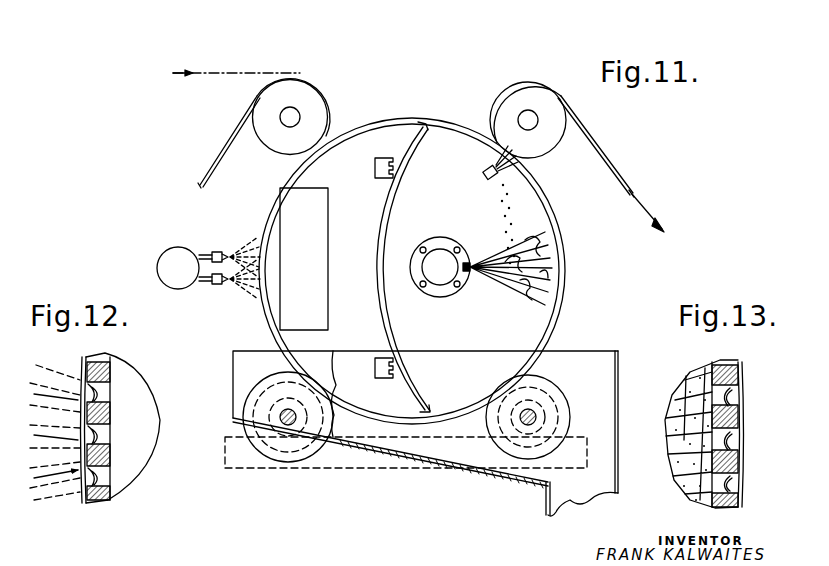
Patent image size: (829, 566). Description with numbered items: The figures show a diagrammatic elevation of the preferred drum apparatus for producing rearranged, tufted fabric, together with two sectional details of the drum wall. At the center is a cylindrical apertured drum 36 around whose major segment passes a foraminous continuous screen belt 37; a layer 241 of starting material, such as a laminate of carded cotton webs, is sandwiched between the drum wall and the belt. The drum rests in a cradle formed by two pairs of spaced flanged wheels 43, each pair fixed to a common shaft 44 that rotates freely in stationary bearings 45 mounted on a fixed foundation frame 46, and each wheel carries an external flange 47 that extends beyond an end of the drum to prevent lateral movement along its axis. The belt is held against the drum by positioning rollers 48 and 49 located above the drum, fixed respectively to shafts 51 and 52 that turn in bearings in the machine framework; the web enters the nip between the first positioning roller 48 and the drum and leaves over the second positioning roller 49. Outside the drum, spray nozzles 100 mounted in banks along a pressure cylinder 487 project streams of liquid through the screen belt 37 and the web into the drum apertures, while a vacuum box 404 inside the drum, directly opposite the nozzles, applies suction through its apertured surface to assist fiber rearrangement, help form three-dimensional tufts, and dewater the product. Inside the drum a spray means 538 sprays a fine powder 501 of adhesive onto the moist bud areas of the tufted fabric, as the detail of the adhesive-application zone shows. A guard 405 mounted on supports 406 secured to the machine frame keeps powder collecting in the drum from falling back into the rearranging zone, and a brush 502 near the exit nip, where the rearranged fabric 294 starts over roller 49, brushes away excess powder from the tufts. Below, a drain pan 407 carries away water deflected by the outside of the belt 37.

In FIG. 11, the cylindrical apertured drum 36 is at (433, 118).
In FIG. 12, the cylindrical apertured drum 36 is at (112, 376).
In FIG. 13, the cylindrical apertured drum 36 is at (720, 500).
In FIG. 11, the continuous screen belt 37 is at (226, 132).
In FIG. 12, the continuous screen belt 37 is at (80, 365).
In FIG. 13, the continuous screen belt 37 is at (740, 378).
In FIG. 11, the layer of starting material 241 is at (272, 70).
In FIG. 12, the layer of starting material 241 is at (94, 502).
In FIG. 13, the layer of starting material 241 is at (742, 448).
In FIG. 11, the first positioning roller 48 is at (292, 87).
In FIG. 11, the second positioning roller 49 is at (521, 95).
In FIG. 11, the shaft 51 is at (300, 111).
In FIG. 11, the shaft 52 is at (534, 127).
In FIG. 11, the rearranged fabric 294 is at (632, 190).
In FIG. 11, the brush 502 is at (504, 181).
In FIG. 11, the fine powder 501 is at (565, 260).
In FIG. 13, the fine powder 501 is at (688, 398).
In FIG. 11, the spray means 538 is at (460, 252).
In FIG. 11, the guard 405 is at (378, 258).
In FIG. 11, the vacuum box 404 is at (290, 226).
In FIG. 11, the supports 406 is at (375, 166).
In FIG. 11, the drain pan 407 is at (248, 332).
In FIG. 11, the pressure cylinder 487 is at (182, 248).
In FIG. 11, the spray nozzles 100 is at (217, 252).
In FIG. 11, the stationary bearings 45 is at (262, 410).
In FIG. 11, the common shaft 44 is at (296, 424).
In FIG. 11, the flanged wheels 43 is at (265, 455).
In FIG. 11, the fixed foundation frame 46 is at (360, 472).
In FIG. 11, the external flange 47 is at (262, 437).